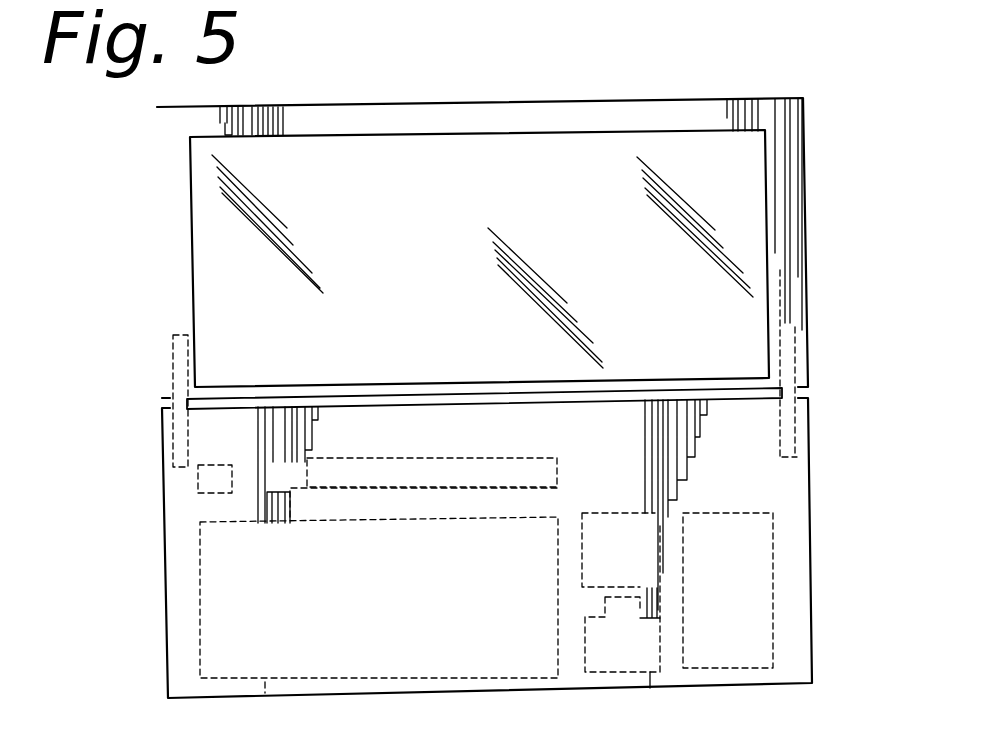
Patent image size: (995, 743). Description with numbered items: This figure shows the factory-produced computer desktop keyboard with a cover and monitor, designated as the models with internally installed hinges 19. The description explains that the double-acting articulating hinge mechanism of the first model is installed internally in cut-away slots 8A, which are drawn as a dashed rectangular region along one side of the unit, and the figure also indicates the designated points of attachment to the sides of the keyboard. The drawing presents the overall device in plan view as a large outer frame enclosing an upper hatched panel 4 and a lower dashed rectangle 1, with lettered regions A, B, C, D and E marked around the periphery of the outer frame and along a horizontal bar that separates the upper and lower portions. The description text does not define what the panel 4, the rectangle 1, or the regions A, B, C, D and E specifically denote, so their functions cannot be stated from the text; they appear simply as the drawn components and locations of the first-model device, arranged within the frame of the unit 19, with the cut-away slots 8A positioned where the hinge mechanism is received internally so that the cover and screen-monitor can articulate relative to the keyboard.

The Models 1A and 1B with internally installed hinges 19 is at (722, 93).
The display panel 4 is at (417, 231).
The circuit board 1 is at (402, 620).
The cut-away slots for hinge mechanism 8A is at (180, 363).
The region A is at (790, 325).
The region B is at (790, 451).
The region C is at (180, 377).
The region D is at (180, 463).
The connection line E is at (170, 403).